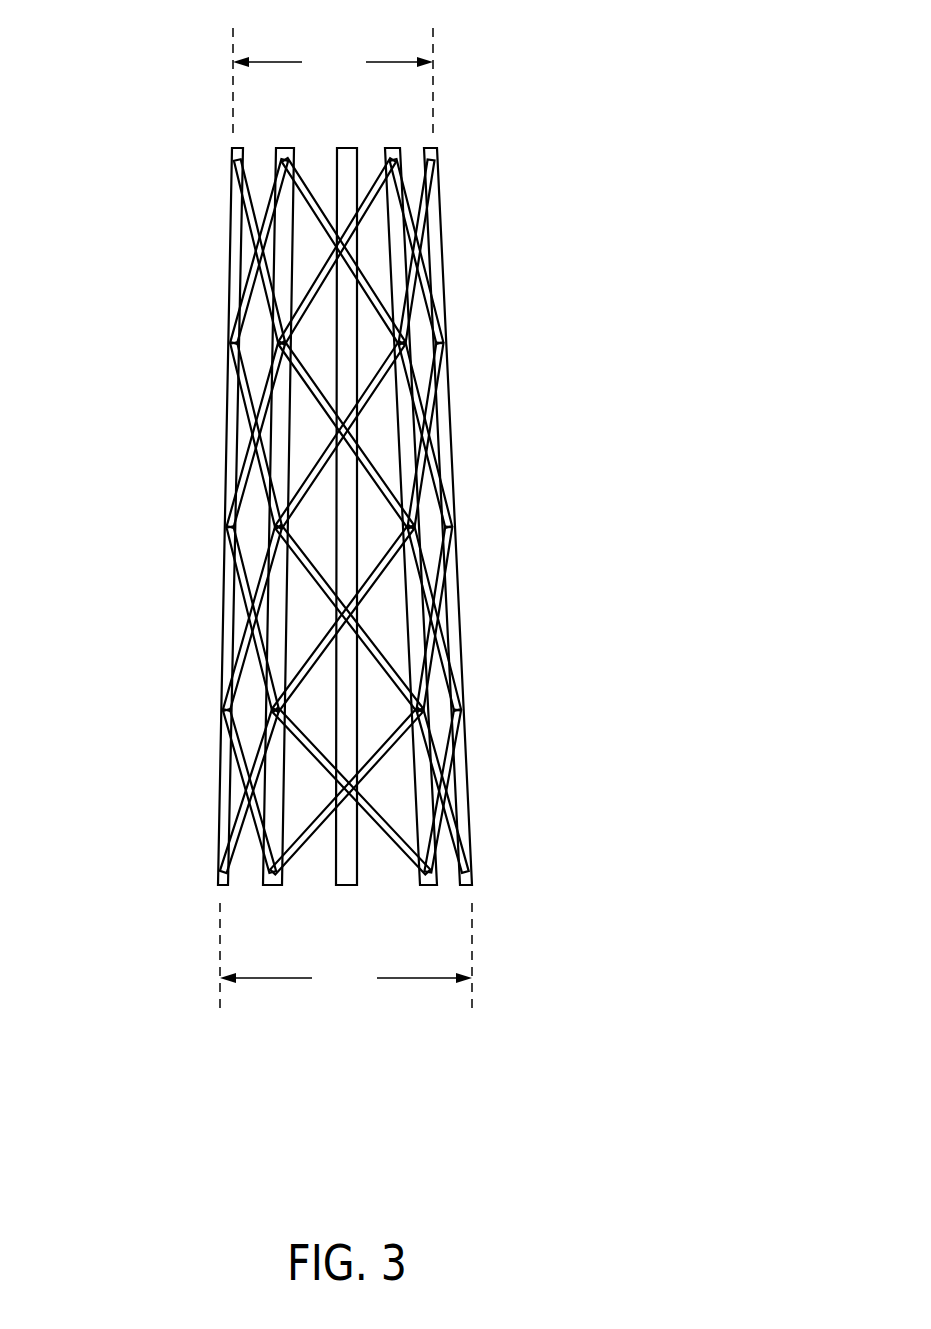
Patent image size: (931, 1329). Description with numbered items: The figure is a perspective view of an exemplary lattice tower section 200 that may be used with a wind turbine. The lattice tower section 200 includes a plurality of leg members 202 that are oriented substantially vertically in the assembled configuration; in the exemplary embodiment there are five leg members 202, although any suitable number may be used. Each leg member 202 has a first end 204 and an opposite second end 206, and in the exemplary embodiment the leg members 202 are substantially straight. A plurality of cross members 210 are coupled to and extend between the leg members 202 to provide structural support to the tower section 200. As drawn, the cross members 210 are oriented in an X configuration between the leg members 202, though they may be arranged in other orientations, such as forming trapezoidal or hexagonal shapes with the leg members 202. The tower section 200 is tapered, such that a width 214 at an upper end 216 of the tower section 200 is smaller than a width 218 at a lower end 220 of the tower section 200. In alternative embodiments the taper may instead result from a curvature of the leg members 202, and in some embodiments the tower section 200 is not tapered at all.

The lattice tower section 200 is at (676, 118).
The leg member 202 is at (443, 430).
The first end 204 is at (436, 152).
The second end 206 is at (472, 882).
The cross member 210 is at (393, 488).
The width 214 is at (333, 84).
The upper end 216 is at (237, 156).
The width 218 is at (346, 958).
The lower end 220 is at (271, 888).